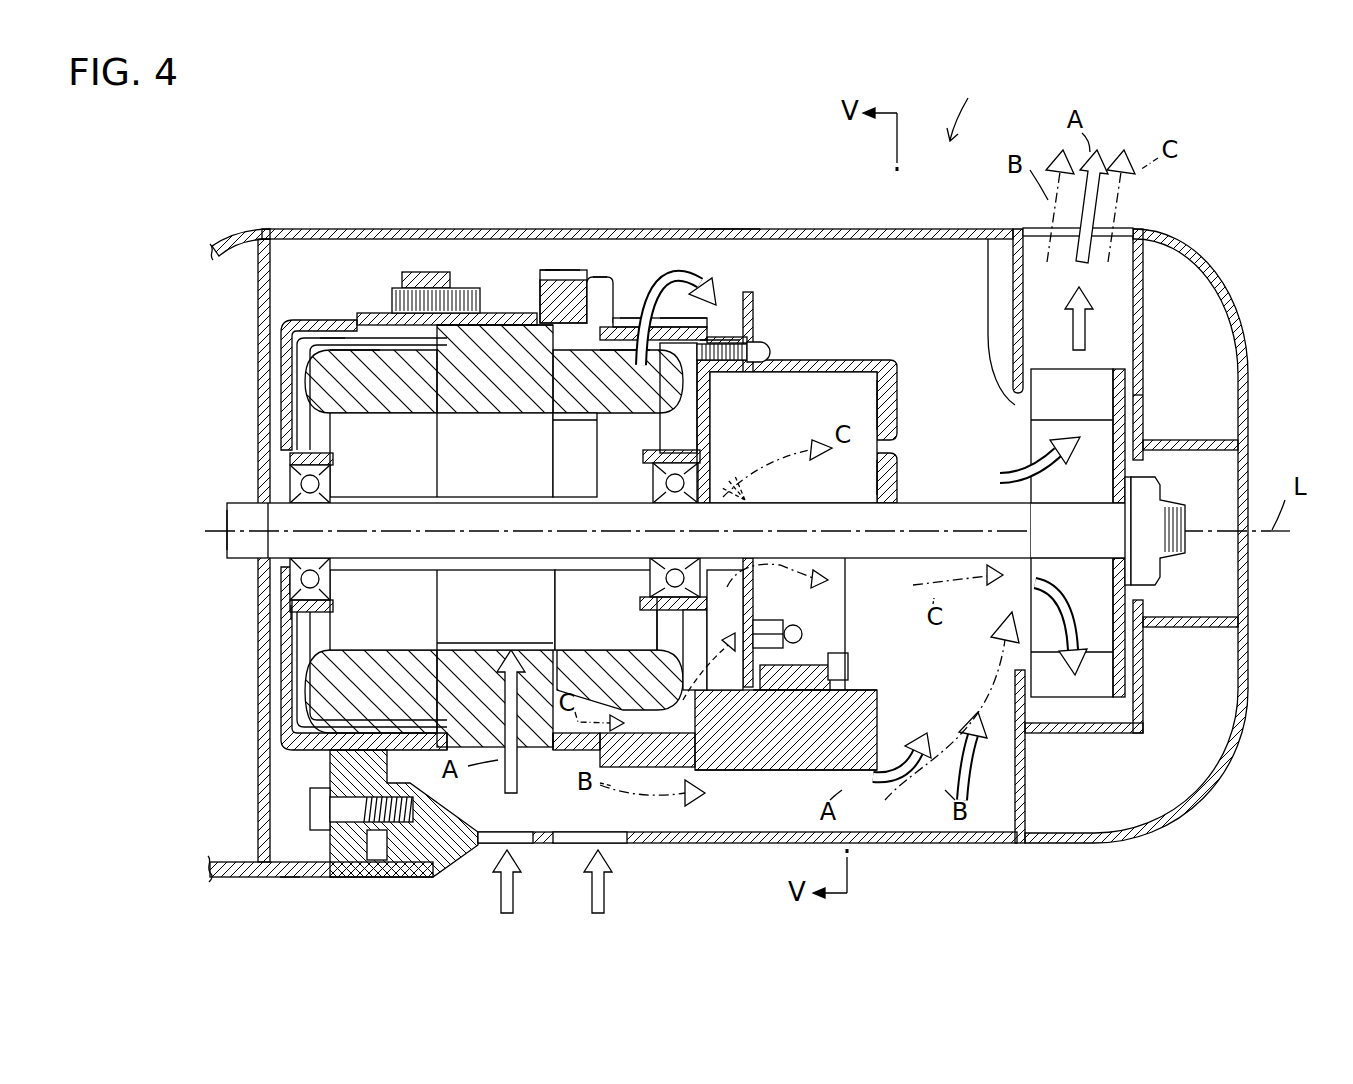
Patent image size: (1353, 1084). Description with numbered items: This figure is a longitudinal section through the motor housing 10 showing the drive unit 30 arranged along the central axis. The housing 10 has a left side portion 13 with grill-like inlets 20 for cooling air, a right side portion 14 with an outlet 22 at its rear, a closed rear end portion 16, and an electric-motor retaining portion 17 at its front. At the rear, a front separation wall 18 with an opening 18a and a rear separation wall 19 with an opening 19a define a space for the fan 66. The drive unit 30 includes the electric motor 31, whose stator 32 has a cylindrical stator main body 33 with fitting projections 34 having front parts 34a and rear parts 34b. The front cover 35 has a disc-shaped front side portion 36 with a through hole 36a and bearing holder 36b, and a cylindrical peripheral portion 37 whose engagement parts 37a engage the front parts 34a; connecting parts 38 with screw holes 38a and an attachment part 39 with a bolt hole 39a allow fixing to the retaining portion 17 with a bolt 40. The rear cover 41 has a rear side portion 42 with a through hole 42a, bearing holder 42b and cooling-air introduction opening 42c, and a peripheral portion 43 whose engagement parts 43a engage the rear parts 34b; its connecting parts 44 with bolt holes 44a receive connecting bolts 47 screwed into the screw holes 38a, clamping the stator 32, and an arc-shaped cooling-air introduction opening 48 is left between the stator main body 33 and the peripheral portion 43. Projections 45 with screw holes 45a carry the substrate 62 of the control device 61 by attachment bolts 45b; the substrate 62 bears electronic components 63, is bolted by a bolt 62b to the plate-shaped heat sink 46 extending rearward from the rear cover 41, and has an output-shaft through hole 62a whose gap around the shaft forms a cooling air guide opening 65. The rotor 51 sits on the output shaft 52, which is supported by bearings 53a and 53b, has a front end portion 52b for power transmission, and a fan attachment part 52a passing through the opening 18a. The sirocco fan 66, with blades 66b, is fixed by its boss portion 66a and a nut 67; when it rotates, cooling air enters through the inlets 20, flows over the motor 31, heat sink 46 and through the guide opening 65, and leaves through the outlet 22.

The motor housing 10 is at (964, 106).
The left side portion 13 is at (695, 845).
The right side portion 14 is at (735, 305).
The rear end portion 16 is at (1249, 680).
The electric-motor retaining portion 17 is at (407, 840).
The front separation wall 18 is at (1019, 765).
The opening 18a is at (1000, 229).
The rear separation wall 19 is at (1145, 275).
The opening 19a is at (1140, 405).
The inlets 20 is at (493, 843).
The outlet 22 is at (1095, 238).
The drive unit 30 is at (740, 806).
The electric motor 31 is at (462, 244).
The stator 32 is at (320, 385).
The stator main body 33 is at (493, 343).
The fitting projections 34 is at (522, 345).
The front parts 34a is at (388, 320).
The rear parts 34b is at (560, 300).
The front cover 35 is at (279, 362).
The front side portion 36 is at (285, 690).
The through hole 36a is at (297, 585).
The bearing holder 36b is at (305, 612).
The peripheral portion 37 is at (312, 312).
The engagement parts 37a is at (372, 353).
The connecting parts 38 is at (422, 270).
The screw holes 38a is at (407, 270).
The attachment part 39 is at (353, 830).
The bolt hole 39a is at (297, 873).
The bolt 40 is at (312, 803).
The rear cover 41 is at (650, 330).
The rear side portion 42 is at (668, 425).
The through hole 42a is at (742, 504).
The bearing holder 42b is at (648, 452).
The cooling-air introduction opening 42c is at (687, 625).
The peripheral portion 43 is at (615, 350).
The engagement parts 43a is at (571, 300).
The connecting parts 44 is at (600, 310).
The bolt holes 44a is at (581, 300).
The projections 45 is at (762, 350).
The screw holes 45a is at (735, 320).
The attachment bolts 45b is at (790, 330).
The heat sink 46 is at (785, 770).
The connecting bolts 47 is at (493, 287).
The cooling-air introduction opening 48 is at (548, 750).
The rotor 51 is at (330, 430).
The output shaft 52 is at (250, 518).
The fan attachment part 52a is at (1090, 555).
The front end portion 52b is at (233, 547).
The bearing 53a is at (290, 473).
The bearing 53b is at (650, 590).
The control device 61 is at (829, 341).
The substrate 62 is at (800, 330).
The output-shaft through hole 62a is at (755, 495).
The bolt 62b is at (850, 665).
The electronic components 63 is at (866, 393).
The cooling air guide opening 65 is at (760, 392).
The fan 66 is at (1122, 405).
The boss portion 66a is at (1127, 500).
The blades 66b is at (1100, 372).
The nut 67 is at (1160, 495).